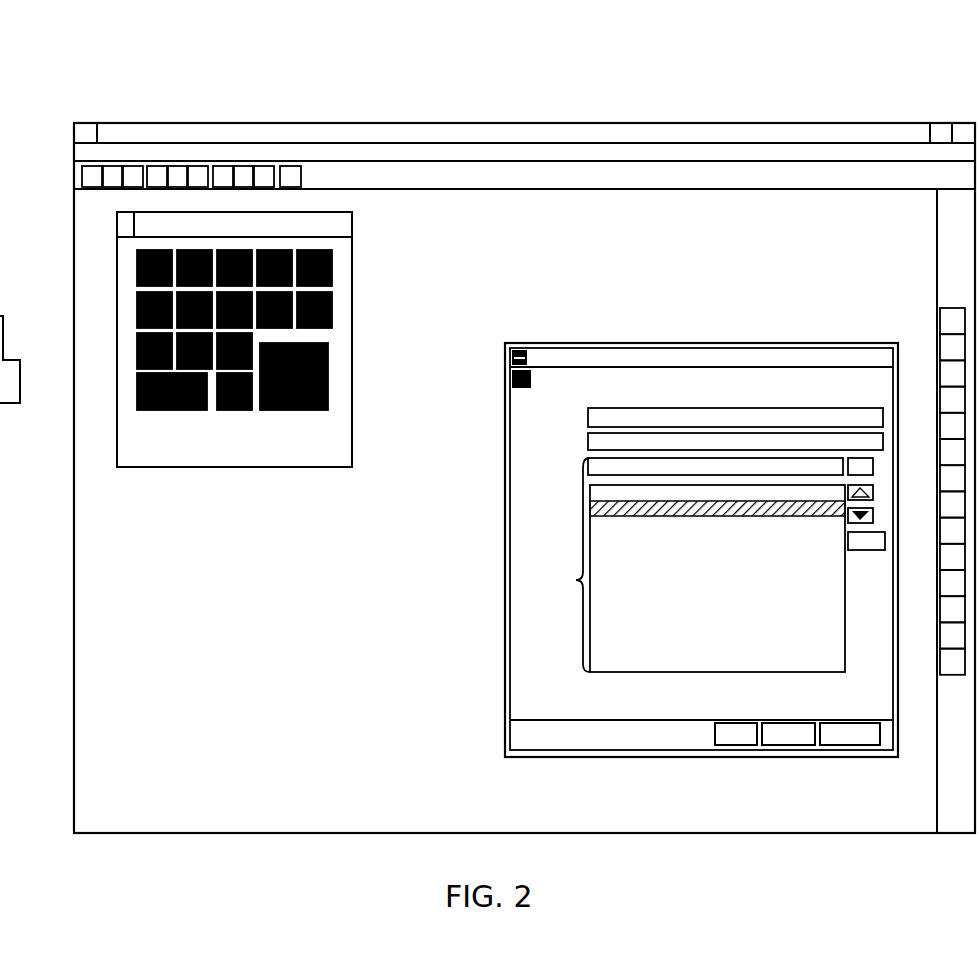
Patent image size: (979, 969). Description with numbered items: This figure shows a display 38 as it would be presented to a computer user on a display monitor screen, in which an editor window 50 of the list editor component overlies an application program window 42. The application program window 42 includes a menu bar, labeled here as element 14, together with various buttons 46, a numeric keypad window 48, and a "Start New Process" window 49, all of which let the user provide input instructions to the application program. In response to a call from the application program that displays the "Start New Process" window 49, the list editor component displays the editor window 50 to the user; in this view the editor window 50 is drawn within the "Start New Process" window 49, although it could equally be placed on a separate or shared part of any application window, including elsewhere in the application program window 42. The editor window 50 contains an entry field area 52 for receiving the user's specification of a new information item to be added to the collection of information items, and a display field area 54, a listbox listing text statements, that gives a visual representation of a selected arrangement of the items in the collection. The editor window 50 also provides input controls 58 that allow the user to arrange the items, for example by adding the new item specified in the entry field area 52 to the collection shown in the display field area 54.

The application program window 14 is at (58, 157).
The display 38 is at (850, 92).
The application program window 42 is at (617, 131).
The buttons 46 is at (322, 174).
The numeric keypad window 48 is at (333, 432).
The Start New Process window 49 is at (732, 343).
The editor window 50 is at (576, 580).
The entry field area 52 is at (747, 468).
The display field area 54 is at (640, 670).
The input controls 58 is at (886, 540).